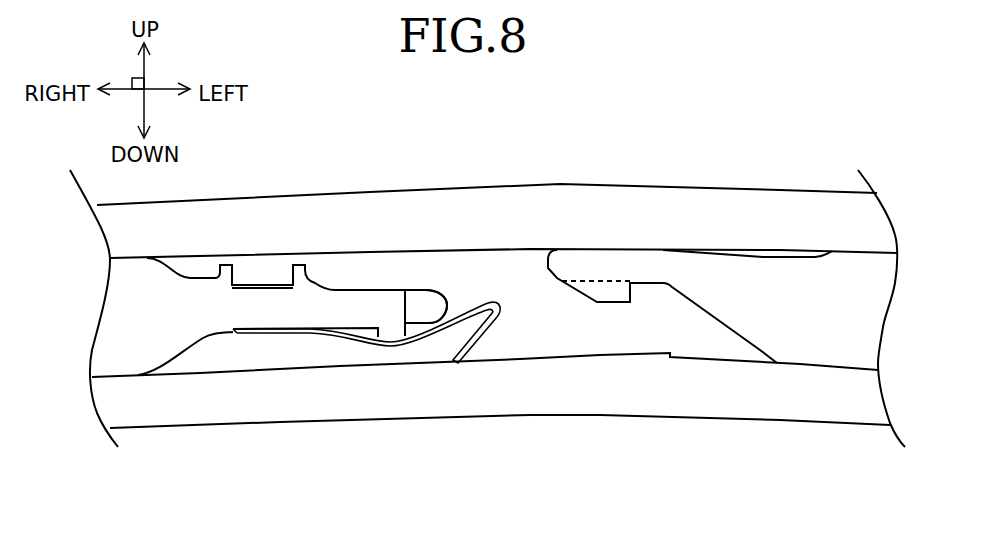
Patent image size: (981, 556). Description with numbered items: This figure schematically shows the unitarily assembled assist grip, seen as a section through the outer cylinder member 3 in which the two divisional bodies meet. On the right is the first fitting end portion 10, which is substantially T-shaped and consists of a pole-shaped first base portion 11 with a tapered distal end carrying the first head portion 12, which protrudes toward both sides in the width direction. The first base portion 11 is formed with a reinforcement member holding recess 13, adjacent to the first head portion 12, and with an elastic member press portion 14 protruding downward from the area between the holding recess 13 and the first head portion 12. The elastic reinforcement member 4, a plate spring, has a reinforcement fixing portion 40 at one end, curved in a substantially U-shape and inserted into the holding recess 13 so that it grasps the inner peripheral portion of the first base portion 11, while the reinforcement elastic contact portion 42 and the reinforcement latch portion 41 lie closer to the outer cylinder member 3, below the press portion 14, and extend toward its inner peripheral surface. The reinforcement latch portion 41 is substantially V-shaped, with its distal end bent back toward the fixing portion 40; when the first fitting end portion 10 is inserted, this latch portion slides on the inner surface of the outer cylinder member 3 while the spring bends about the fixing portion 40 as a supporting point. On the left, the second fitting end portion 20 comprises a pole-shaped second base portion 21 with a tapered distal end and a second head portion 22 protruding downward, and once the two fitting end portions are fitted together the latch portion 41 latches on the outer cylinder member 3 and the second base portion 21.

The outer cylinder member 3 is at (542, 203).
The first fitting end portion 10 is at (155, 342).
The first base portion 11 is at (363, 300).
The first head portion 12 is at (418, 297).
The reinforcement member holding recess 13 is at (292, 265).
The elastic member press portion 14 is at (392, 327).
The elastic reinforcement member 4 is at (386, 402).
The reinforcement fixing portion 40 is at (278, 333).
The reinforcement latch portion 41 is at (482, 337).
The reinforcement elastic contact portion 42 is at (415, 340).
The second fitting end portion 20 is at (810, 347).
The second base portion 21 is at (617, 257).
The second head portion 22 is at (617, 293).